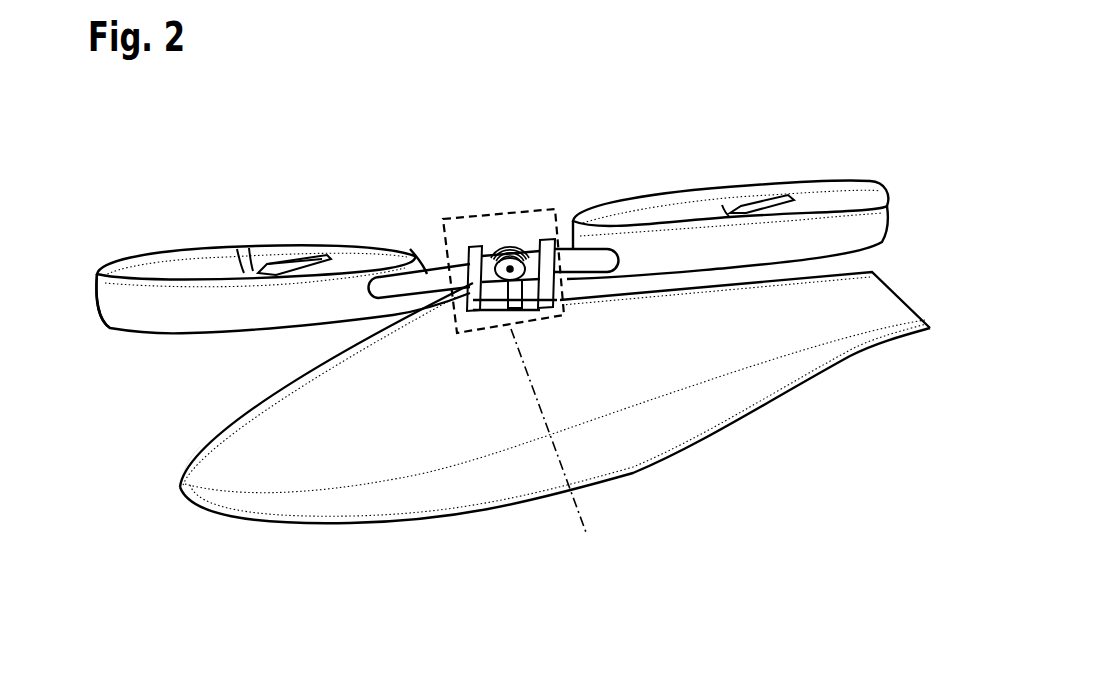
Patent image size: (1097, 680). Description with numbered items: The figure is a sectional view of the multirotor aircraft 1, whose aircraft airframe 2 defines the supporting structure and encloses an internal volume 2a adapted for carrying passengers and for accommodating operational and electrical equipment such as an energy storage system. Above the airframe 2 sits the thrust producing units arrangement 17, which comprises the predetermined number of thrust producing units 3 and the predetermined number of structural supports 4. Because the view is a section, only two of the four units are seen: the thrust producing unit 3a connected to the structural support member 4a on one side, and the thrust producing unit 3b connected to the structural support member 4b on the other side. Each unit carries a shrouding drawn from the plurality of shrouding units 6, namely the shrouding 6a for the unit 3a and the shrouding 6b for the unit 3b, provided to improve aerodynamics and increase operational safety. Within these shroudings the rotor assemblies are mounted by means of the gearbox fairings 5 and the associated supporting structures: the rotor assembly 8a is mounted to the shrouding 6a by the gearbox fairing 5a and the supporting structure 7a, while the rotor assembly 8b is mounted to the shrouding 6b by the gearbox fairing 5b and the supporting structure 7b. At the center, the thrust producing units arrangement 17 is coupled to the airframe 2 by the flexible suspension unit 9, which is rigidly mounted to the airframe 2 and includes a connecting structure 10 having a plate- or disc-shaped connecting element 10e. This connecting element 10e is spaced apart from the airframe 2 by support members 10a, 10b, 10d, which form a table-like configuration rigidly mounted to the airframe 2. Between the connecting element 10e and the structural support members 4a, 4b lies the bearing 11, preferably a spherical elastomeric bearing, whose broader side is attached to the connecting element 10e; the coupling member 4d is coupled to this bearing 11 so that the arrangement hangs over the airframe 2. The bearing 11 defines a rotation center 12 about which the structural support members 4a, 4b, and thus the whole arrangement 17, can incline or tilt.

The multirotor aircraft 1 is at (212, 157).
The aircraft airframe 2 is at (215, 482).
The internal volume 2a is at (243, 462).
The thrust producing units 3 is at (758, 183).
The thrust producing unit 3a is at (258, 273).
The thrust producing unit 3b is at (700, 188).
The structural supports 4 is at (552, 307).
The structural support member 4a is at (422, 273).
The structural support member 4b is at (579, 249).
The coupling member 4d is at (562, 303).
The gearbox fairings 5 is at (241, 252).
The gearbox fairing 5a is at (250, 266).
The gearbox fairing 5b is at (723, 214).
The shrouding units 6 is at (125, 338).
The shrouding 6a is at (112, 304).
The shrouding 6b is at (857, 230).
The supporting structure 7a is at (314, 197).
The rotor assembly 8a is at (293, 253).
The supporting structure 7b is at (790, 150).
The rotor assembly 8b is at (767, 192).
The flexible suspension unit 9 is at (536, 308).
The connecting structure 10 is at (541, 336).
The support member 10a is at (463, 247).
The support member 10b is at (503, 297).
The support member 10d is at (556, 254).
The connecting element 10e is at (524, 244).
The bearing 11 is at (492, 243).
The rotation center 12 is at (447, 292).
The thrust producing units arrangement 17 is at (170, 247).